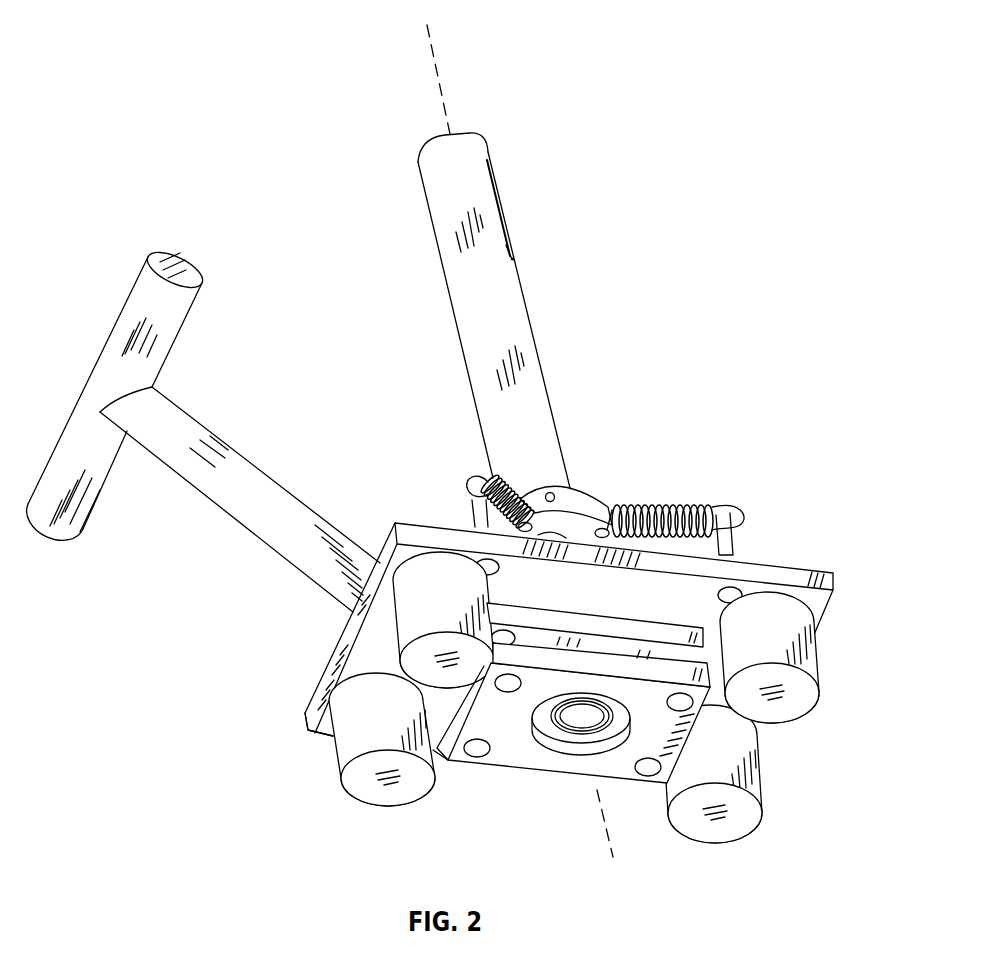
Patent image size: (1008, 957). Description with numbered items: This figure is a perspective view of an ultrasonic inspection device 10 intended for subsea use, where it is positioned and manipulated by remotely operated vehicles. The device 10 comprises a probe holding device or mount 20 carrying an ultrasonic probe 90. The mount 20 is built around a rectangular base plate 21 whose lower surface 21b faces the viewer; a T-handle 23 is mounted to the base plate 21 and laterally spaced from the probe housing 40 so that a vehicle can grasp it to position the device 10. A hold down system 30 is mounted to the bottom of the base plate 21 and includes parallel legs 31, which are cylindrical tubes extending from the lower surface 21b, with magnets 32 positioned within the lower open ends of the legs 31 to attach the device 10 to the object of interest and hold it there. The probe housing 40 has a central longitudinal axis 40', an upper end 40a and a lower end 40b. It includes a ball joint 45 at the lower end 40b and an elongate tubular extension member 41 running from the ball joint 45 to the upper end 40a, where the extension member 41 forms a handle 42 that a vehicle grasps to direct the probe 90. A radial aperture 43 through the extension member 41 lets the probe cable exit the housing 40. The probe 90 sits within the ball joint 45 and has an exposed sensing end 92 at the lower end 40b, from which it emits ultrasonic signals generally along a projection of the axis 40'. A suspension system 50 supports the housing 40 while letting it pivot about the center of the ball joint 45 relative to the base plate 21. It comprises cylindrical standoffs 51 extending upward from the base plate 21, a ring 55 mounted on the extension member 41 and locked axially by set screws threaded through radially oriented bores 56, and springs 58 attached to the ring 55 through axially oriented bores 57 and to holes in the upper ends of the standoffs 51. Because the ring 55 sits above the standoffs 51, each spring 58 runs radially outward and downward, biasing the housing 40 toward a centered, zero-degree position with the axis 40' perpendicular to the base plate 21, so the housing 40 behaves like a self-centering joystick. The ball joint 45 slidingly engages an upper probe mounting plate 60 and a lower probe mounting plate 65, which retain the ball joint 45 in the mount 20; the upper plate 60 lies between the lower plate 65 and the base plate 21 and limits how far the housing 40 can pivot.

The ultrasonic inspection device 10 is at (186, 31).
The probe holding device or mount 20 is at (490, 447).
The base plate 21 is at (833, 577).
The lower surface 21b is at (318, 733).
The handle 23 is at (195, 426).
The hold down system 30 is at (376, 853).
The legs 31 is at (805, 652).
The magnets 32 is at (803, 696).
The probe housing 40 is at (481, 441).
The central or longitudinal axis 40' is at (520, 441).
The upper end 40a is at (428, 167).
The lower end 40b is at (536, 720).
The extension member 41 is at (545, 400).
The handle 42 is at (487, 182).
The through hole or aperture 43 is at (513, 240).
The ball joint 45 is at (536, 720).
The suspension system 50 is at (658, 451).
The standoffs 51 is at (470, 513).
The ring 55 is at (572, 496).
The radially oriented bores 56 is at (547, 493).
The axially oriented bores 57 is at (625, 507).
The springs 58 is at (676, 508).
The upper probe mounting plate 60 is at (625, 624).
The lower probe mounting plate 65 is at (617, 770).
The ultrasonic probe 90 is at (572, 718).
The exposed sensing end 92 is at (572, 718).